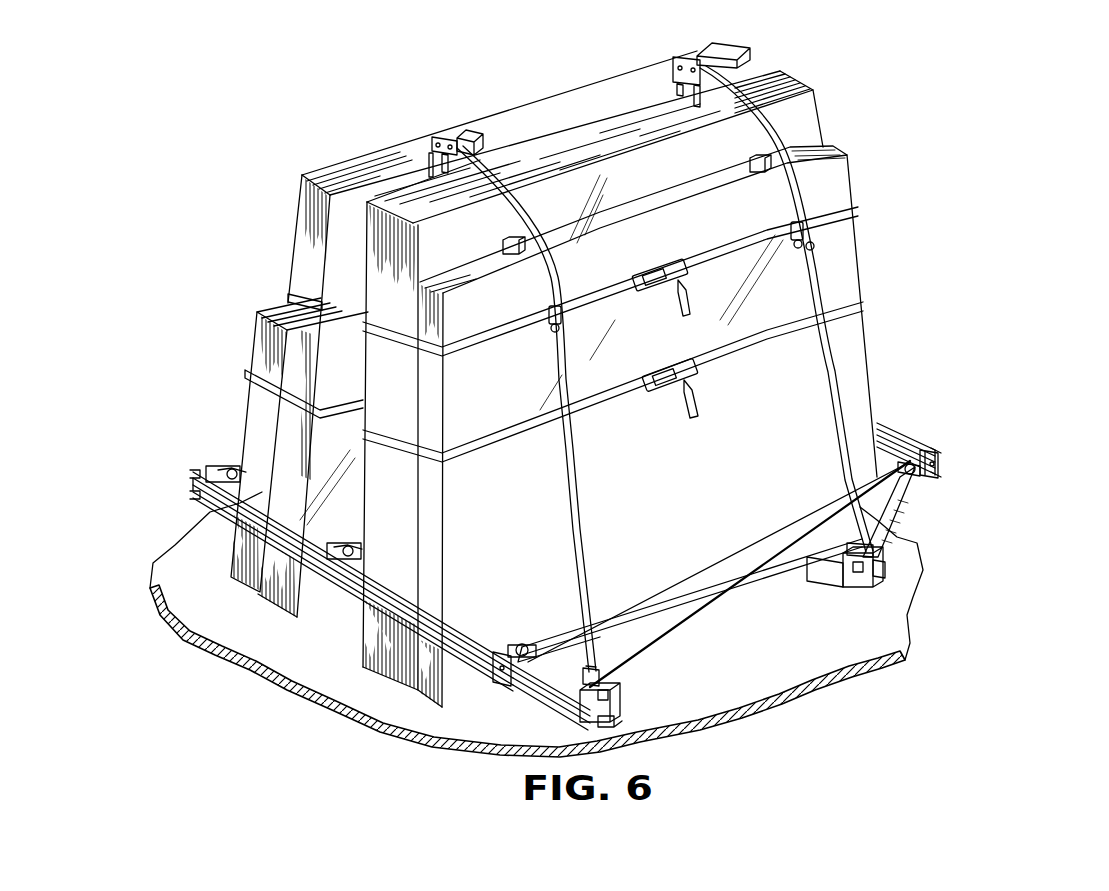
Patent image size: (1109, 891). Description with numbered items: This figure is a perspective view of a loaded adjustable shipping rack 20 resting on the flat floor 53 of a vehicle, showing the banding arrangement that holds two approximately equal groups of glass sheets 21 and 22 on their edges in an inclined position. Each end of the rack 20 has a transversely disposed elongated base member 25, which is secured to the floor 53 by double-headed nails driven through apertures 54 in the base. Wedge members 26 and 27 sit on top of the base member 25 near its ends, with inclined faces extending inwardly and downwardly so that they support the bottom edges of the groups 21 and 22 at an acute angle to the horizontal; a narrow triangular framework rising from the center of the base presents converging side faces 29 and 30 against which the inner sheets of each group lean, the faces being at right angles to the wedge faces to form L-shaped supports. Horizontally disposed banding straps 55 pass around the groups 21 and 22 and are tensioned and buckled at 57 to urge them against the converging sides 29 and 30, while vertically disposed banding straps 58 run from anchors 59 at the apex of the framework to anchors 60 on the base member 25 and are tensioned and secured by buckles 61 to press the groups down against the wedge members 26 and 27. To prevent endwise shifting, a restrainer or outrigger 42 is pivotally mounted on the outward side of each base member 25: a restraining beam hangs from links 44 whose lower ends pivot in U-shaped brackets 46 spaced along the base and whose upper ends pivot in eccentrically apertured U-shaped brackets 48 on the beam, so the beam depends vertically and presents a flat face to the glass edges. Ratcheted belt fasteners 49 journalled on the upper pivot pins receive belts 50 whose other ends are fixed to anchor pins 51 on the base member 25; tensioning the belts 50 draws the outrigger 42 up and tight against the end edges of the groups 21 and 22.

The adjustable shipping rack 20 is at (811, 57).
The group of glass sheets 21 is at (857, 166).
The group of glass sheets 22 is at (530, 88).
The base member 25 is at (614, 711).
The wedge member 26 is at (827, 540).
The wedge member 27 is at (571, 657).
The converging side face 29 is at (430, 160).
The converging side face 30 is at (495, 166).
The restrainer or outrigger means 42 is at (352, 604).
The link 44 is at (548, 694).
The U-shaped bracket 46 is at (583, 719).
The U-shaped bracket 48 is at (212, 468).
The ratcheted belt fastener 49 is at (232, 468).
The belt 50 is at (733, 583).
The anchor pin 51 is at (608, 694).
The floor 53 is at (764, 673).
The aperture 54 is at (840, 586).
The horizontally disposed banding strap 55 is at (288, 296).
The buckle 57 is at (662, 291).
The vertically disposed banding strap 58 is at (440, 137).
The anchor 59 is at (470, 132).
The anchor 60 is at (591, 672).
The buckle 61 is at (552, 326).